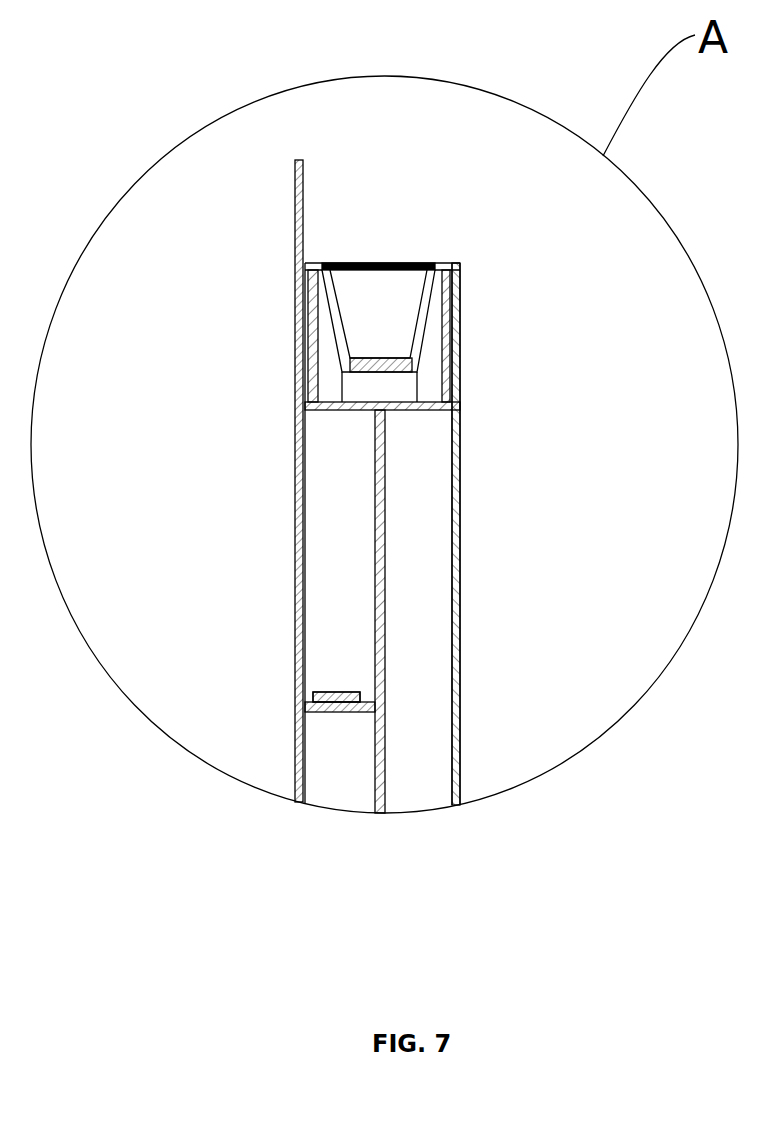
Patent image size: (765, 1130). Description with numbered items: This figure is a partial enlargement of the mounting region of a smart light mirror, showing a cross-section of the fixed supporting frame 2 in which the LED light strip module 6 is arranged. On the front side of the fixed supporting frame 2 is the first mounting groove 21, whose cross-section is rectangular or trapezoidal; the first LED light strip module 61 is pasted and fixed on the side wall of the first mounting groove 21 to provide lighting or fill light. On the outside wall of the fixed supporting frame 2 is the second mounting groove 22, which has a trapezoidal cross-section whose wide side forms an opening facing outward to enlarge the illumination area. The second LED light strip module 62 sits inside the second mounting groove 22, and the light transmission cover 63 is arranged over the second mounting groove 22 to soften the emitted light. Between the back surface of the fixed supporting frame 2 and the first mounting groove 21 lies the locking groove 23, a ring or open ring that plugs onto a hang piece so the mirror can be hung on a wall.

The fixed supporting frame 2 is at (458, 387).
The first mounting groove 21 is at (335, 538).
The second mounting groove 22 is at (402, 322).
The locking groove 23 is at (440, 468).
The LED light strip module 6 is at (360, 695).
The first LED light strip module 61 is at (312, 695).
The second LED light strip module 62 is at (355, 360).
The light transmission cover 63 is at (340, 263).